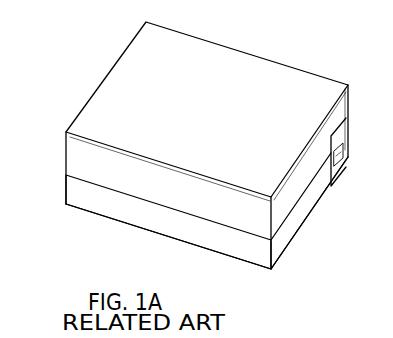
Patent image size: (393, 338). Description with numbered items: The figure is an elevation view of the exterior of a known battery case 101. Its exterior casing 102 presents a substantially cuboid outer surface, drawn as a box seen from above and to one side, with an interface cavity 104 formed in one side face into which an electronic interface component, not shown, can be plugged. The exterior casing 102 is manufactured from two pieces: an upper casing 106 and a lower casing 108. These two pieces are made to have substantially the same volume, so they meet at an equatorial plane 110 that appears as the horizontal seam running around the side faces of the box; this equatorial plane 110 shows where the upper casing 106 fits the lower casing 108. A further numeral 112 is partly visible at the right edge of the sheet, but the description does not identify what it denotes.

The battery case 101 is at (285, 50).
The exterior casing 102 is at (133, 66).
The interface cavity 104 is at (344, 150).
The upper casing 106 is at (86, 149).
The lower casing 108 is at (90, 200).
The equatorial plane 110 is at (80, 179).
The side element (cut off) 112 is at (386, 129).